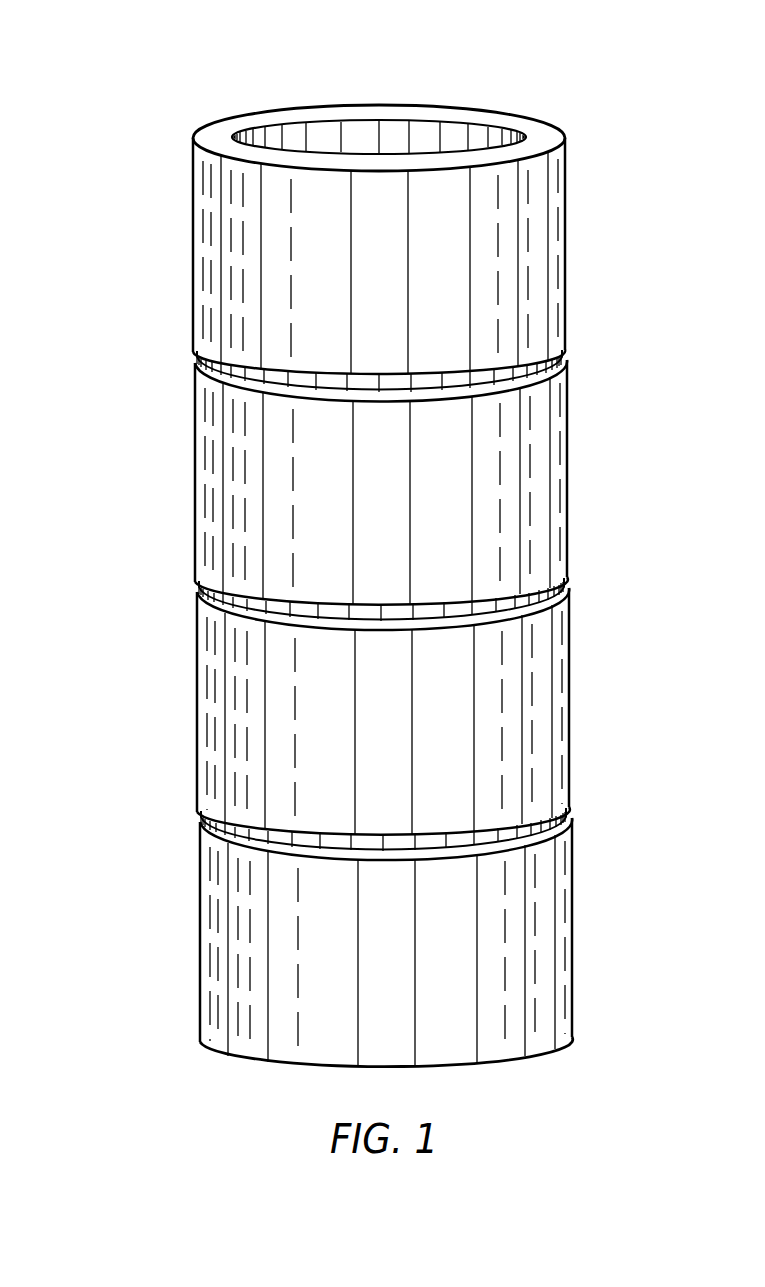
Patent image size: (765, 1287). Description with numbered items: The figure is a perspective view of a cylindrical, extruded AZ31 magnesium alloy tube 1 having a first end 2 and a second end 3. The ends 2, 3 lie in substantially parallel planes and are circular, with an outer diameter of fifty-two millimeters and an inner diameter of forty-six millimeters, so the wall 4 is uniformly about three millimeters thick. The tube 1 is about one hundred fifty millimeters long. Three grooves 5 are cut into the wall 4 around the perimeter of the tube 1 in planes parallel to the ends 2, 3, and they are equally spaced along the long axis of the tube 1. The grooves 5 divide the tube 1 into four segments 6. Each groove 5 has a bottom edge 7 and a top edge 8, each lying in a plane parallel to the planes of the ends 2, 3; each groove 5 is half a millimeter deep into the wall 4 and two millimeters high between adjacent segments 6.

The magnesium alloy tube 1 is at (130, 68).
The first end 2 is at (530, 118).
The second end 3 is at (520, 1057).
The wall 4 is at (543, 135).
The grooves 5 is at (183, 362).
The segments 6 is at (193, 248).
The bottom edge 7 is at (567, 362).
The top edge 8 is at (570, 815).